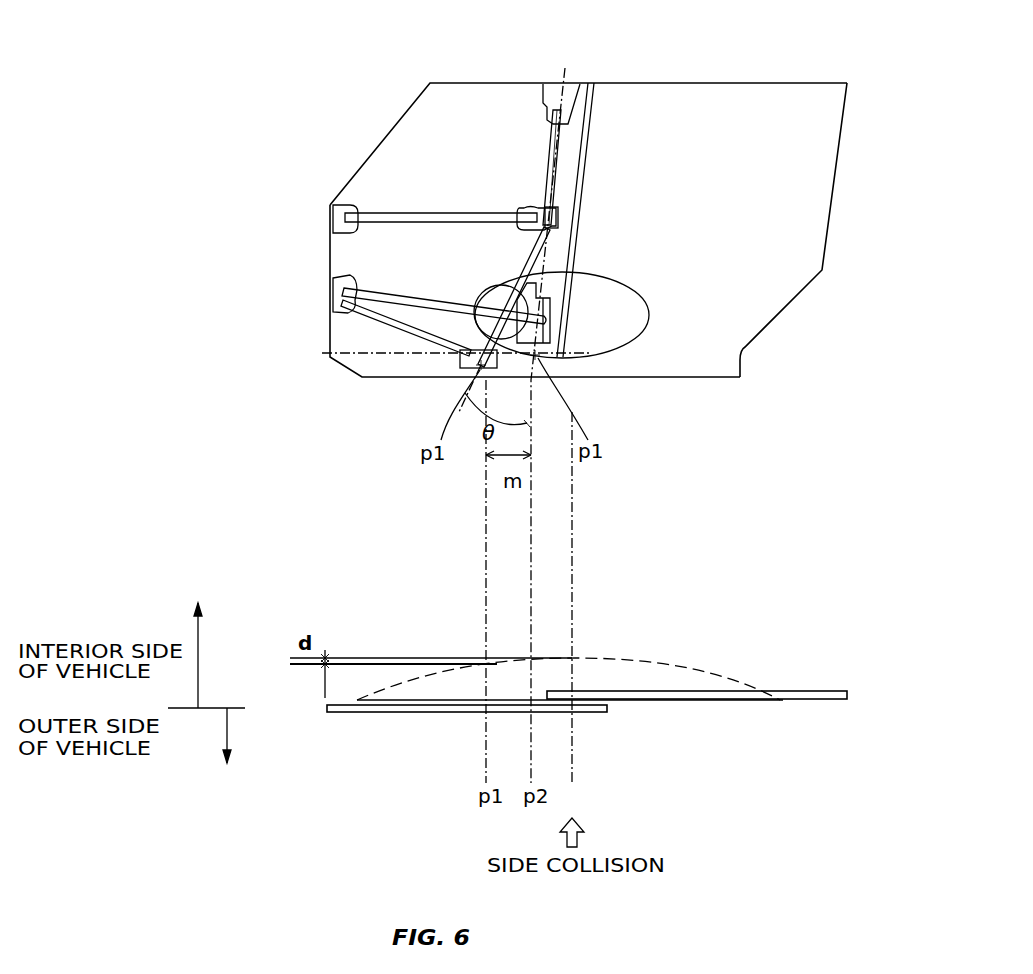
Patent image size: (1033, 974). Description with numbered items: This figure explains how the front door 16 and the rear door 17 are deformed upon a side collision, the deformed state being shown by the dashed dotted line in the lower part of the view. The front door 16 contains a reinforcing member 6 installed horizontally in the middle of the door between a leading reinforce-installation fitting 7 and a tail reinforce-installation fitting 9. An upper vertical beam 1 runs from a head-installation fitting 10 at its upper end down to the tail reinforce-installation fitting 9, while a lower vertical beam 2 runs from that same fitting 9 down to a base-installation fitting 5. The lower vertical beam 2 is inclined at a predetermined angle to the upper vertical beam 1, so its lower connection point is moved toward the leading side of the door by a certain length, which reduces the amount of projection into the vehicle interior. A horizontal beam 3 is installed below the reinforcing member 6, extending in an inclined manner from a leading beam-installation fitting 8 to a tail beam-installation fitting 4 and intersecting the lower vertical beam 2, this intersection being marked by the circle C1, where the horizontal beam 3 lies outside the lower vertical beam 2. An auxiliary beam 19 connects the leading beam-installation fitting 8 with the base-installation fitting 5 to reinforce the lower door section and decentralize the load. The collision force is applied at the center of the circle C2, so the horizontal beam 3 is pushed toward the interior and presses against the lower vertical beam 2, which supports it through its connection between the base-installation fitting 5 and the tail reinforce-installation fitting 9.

The upper vertical beam 1 is at (552, 168).
The lower vertical beam 2 is at (524, 250).
The horizontal beam 3 is at (395, 295).
The tail beam-installation fitting 4 is at (560, 318).
The base-installation fitting 5 is at (470, 356).
The reinforcing member 6 is at (427, 212).
The leading reinforce-installation fitting 7 is at (330, 212).
The leading beam-installation fitting 8 is at (333, 300).
The tail reinforce-installation fitting 9 is at (560, 218).
The head-installation fitting 10 is at (585, 117).
The front door 16 is at (397, 88).
The rear door 17 is at (775, 68).
The auxiliary beam 19 is at (395, 325).
The circle C1 is at (486, 290).
The circle C2 is at (590, 275).